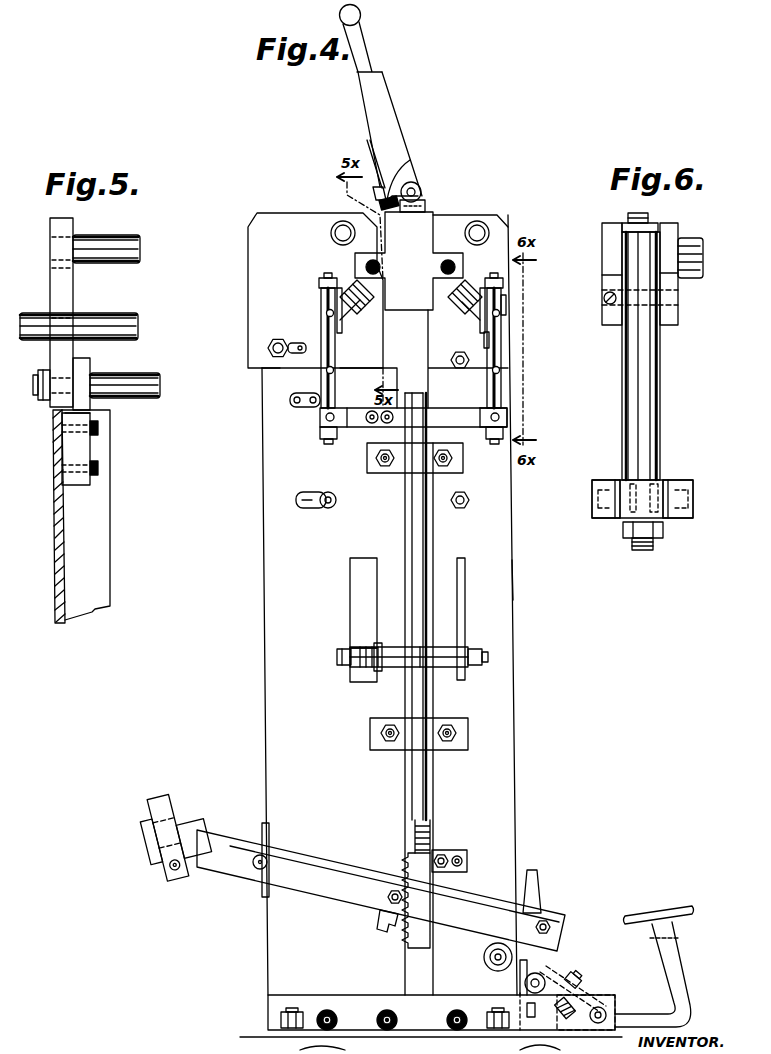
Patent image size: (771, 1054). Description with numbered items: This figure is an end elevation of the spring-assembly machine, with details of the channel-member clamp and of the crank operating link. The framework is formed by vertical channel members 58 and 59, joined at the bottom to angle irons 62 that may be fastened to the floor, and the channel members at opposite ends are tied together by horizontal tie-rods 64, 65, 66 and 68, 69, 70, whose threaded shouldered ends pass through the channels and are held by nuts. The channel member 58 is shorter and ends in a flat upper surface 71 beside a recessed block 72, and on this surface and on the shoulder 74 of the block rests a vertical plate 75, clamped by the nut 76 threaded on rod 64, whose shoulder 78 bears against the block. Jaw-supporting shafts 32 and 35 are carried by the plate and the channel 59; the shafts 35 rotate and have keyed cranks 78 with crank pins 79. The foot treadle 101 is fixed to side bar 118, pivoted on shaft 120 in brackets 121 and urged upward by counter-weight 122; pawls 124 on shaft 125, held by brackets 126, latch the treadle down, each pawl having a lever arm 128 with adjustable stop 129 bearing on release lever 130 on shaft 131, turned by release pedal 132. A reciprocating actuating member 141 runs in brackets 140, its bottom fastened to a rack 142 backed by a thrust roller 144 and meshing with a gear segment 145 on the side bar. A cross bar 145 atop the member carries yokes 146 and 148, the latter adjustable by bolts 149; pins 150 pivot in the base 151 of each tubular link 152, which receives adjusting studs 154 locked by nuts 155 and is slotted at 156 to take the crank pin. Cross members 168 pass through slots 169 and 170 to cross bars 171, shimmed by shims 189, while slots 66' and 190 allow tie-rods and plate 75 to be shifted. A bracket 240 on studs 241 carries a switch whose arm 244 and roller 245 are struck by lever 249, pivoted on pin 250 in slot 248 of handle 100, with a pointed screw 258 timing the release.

In FIG. 4, the jaw-supporting shaft 32 is at (331, 234).
In FIG. 5, the jaw-supporting shaft 32 is at (110, 236).
In FIG. 4, the jaw-supporting shaft 35 is at (411, 306).
In FIG. 5, the jaw-supporting shaft 35 is at (107, 313).
In FIG. 6, the jaw-supporting shaft 35 is at (696, 252).
In FIG. 4, the vertical channel member 58 is at (265, 576).
In FIG. 5, the vertical channel member 58 is at (101, 534).
In FIG. 4, the vertical channel member 59 is at (514, 578).
In FIG. 4, the angle iron 62 is at (362, 1003).
In FIG. 4, the tie-rod 64 is at (275, 338).
In FIG. 5, the tie-rod 64 is at (145, 376).
In FIG. 4, the tie-rod 65 is at (291, 404).
In FIG. 4, the tie-rod 66 is at (341, 497).
In FIG. 4, the slot 66' is at (309, 515).
In FIG. 4, the tie-rod 68 is at (461, 351).
In FIG. 4, the tie-rod 69 is at (465, 506).
In FIG. 4, the tie-rod 70 is at (484, 959).
In FIG. 4, the flat upper surface 71 is at (281, 369).
In FIG. 5, the flat upper surface 71 is at (52, 413).
In FIG. 5, the recessed block 72 is at (84, 454).
In FIG. 5, the shoulder 74 is at (80, 414).
In FIG. 4, the vertical plate 75 is at (248, 283).
In FIG. 5, the vertical plate 75 is at (50, 304).
In FIG. 5, the nut 76 is at (39, 374).
In FIG. 4, the crank 78 is at (336, 303).
In FIG. 5, the crank 78 is at (90, 366).
In FIG. 6, the crank 78 is at (602, 262).
In FIG. 4, the crank pin 79 is at (506, 310).
In FIG. 6, the crank pin 79 is at (678, 298).
In FIG. 4, the handle 100 is at (385, 112).
In FIG. 4, the foot treadle 101 is at (546, 919).
In FIG. 4, the side bar 118 is at (343, 896).
In FIG. 4, the shaft 120 is at (256, 868).
In FIG. 4, the bracket 121 is at (262, 840).
In FIG. 4, the counter-weight 122 is at (164, 809).
In FIG. 4, the pawl 124 is at (539, 880).
In FIG. 4, the shaft 125 is at (548, 982).
In FIG. 4, the bracket 126 is at (524, 984).
In FIG. 4, the lever arm 128 is at (582, 995).
In FIG. 4, the adjustable stop 129 is at (580, 976).
In FIG. 4, the release lever 130 is at (607, 996).
In FIG. 4, the shaft 131 is at (607, 1015).
In FIG. 4, the release pedal 132 is at (680, 908).
In FIG. 4, the bracket 140 is at (437, 466).
In FIG. 4, the reciprocating actuating member 141 is at (420, 560).
In FIG. 4, the rack 142 is at (448, 872).
In FIG. 4, the thrust roller 144 is at (447, 852).
In FIG. 4, the cross bar 145 is at (448, 414).
In FIG. 4, the yoke 146 is at (507, 412).
In FIG. 6, the yoke 146 is at (680, 482).
In FIG. 4, the yoke 148 is at (318, 433).
In FIG. 4, the bolt 149 is at (372, 424).
In FIG. 4, the pin 150 is at (503, 430).
In FIG. 6, the pin 150 is at (598, 497).
In FIG. 6, the base 151 is at (656, 480).
In FIG. 4, the tubular link 152 is at (321, 383).
In FIG. 6, the tubular link 152 is at (660, 430).
In FIG. 4, the adjusting stud 154 is at (328, 273).
In FIG. 6, the adjusting stud 154 is at (645, 214).
In FIG. 6, the lock nut 155 is at (656, 226).
In FIG. 4, the slot 156 is at (502, 345).
In FIG. 4, the cross member 168 is at (465, 652).
In FIG. 4, the slot 169 is at (358, 684).
In FIG. 4, the slot 170 is at (466, 678).
In FIG. 4, the cross bar 171 is at (336, 660).
In FIG. 4, the shim 189 is at (358, 645).
In FIG. 4, the slot 190 is at (299, 342).
In FIG. 4, the bracket 240 is at (430, 222).
In FIG. 4, the stud 241 is at (441, 266).
In FIG. 4, the actuating arm 244 is at (420, 204).
In FIG. 4, the roller 245 is at (417, 184).
In FIG. 4, the slot 248 is at (395, 196).
In FIG. 4, the lever 249 is at (378, 204).
In FIG. 4, the pin 250 is at (370, 160).
In FIG. 4, the pointed screw 258 is at (404, 176).